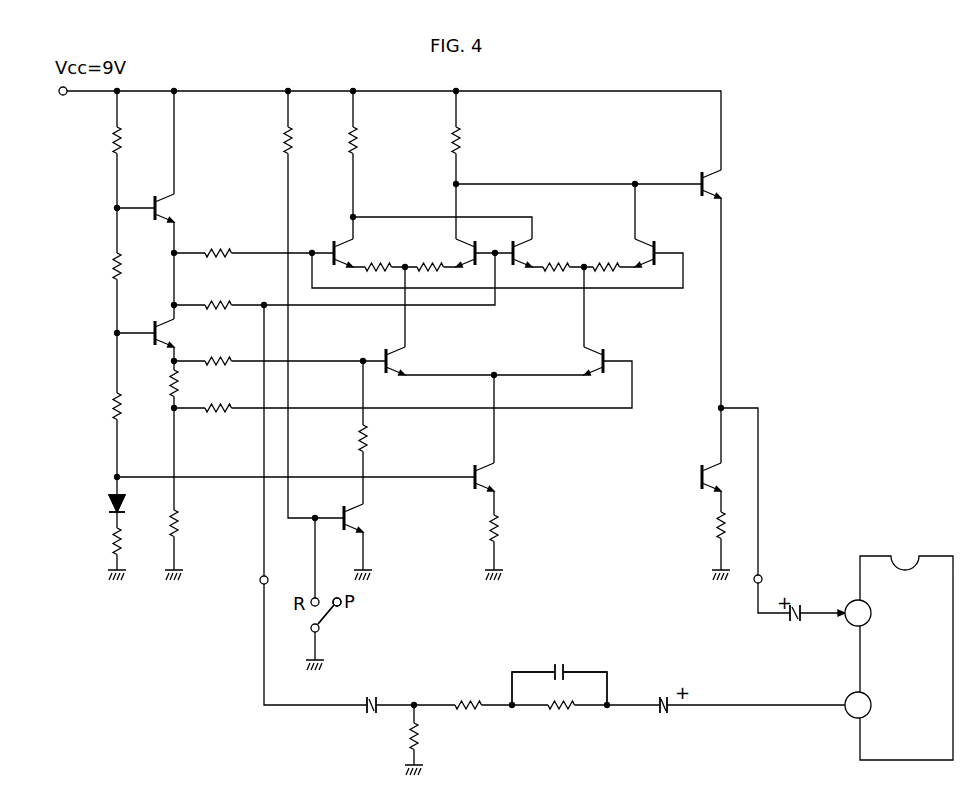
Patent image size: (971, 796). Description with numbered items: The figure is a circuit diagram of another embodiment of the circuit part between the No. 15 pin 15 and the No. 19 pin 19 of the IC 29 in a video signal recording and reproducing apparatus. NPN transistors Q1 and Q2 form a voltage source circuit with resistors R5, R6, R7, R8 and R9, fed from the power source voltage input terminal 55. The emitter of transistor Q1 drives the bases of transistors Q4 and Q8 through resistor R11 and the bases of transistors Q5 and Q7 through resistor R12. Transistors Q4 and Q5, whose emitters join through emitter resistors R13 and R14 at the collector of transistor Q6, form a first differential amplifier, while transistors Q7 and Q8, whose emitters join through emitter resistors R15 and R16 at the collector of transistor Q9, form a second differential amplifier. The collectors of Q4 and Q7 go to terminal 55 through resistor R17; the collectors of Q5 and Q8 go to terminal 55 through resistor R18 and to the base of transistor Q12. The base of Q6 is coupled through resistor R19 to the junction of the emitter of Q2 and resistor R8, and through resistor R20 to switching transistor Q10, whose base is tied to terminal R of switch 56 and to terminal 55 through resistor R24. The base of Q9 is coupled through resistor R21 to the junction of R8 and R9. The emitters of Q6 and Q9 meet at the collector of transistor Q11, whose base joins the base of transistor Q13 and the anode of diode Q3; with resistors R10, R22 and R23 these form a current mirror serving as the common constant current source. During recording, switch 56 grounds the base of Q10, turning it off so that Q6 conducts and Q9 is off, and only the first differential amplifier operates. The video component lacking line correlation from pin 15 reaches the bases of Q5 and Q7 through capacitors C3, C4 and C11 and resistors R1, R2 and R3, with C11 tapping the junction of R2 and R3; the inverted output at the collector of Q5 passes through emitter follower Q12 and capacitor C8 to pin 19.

The power source voltage input terminal 55 is at (63, 95).
The switch 56 is at (330, 616).
The IC 29 is at (925, 556).
The No. 19 pin 19 is at (858, 613).
The No. 15 pin 15 is at (858, 705).
The NPN type transistor Q1 is at (179, 208).
The NPN type transistor Q2 is at (179, 333).
The diode Q3 is at (98, 506).
The NPN type transistor Q4 is at (335, 245).
The NPN type transistor Q5 is at (471, 245).
The NPN type transistor Q6 is at (411, 361).
The NPN type transistor Q7 is at (514, 245).
The NPN type transistor Q8 is at (654, 245).
The NPN type transistor Q9 is at (576, 361).
The NPN type switching transistor Q10 is at (375, 518).
The NPN type transistor Q11 is at (507, 472).
The NPN type transistor Q12 is at (735, 184).
The NPN type transistor Q13 is at (704, 466).
The resistor R1 is at (561, 718).
The resistor R2 is at (466, 692).
The resistor R3 is at (428, 736).
The resistor R5 is at (131, 140).
The resistor R6 is at (131, 266).
The resistor R7 is at (131, 406).
The resistor R8 is at (187, 383).
The resistor R9 is at (188, 523).
The resistor R10 is at (96, 541).
The resistor R11 is at (218, 242).
The resistor R12 is at (218, 294).
The emitter resistor R13 is at (377, 257).
The emitter resistor R14 is at (429, 257).
The emitter resistor R15 is at (559, 257).
The emitter resistor R16 is at (611, 257).
The resistor R17 is at (372, 140).
The resistor R18 is at (476, 140).
The resistor R19 is at (218, 350).
The resistor R20 is at (383, 438).
The resistor R21 is at (222, 421).
The resistor R22 is at (514, 528).
The resistor R23 is at (699, 526).
The resistor R24 is at (307, 140).
The capacitor C3 is at (665, 716).
The capacitor C4 is at (559, 671).
The capacitor C8 is at (797, 596).
The capacitor C11 is at (374, 694).